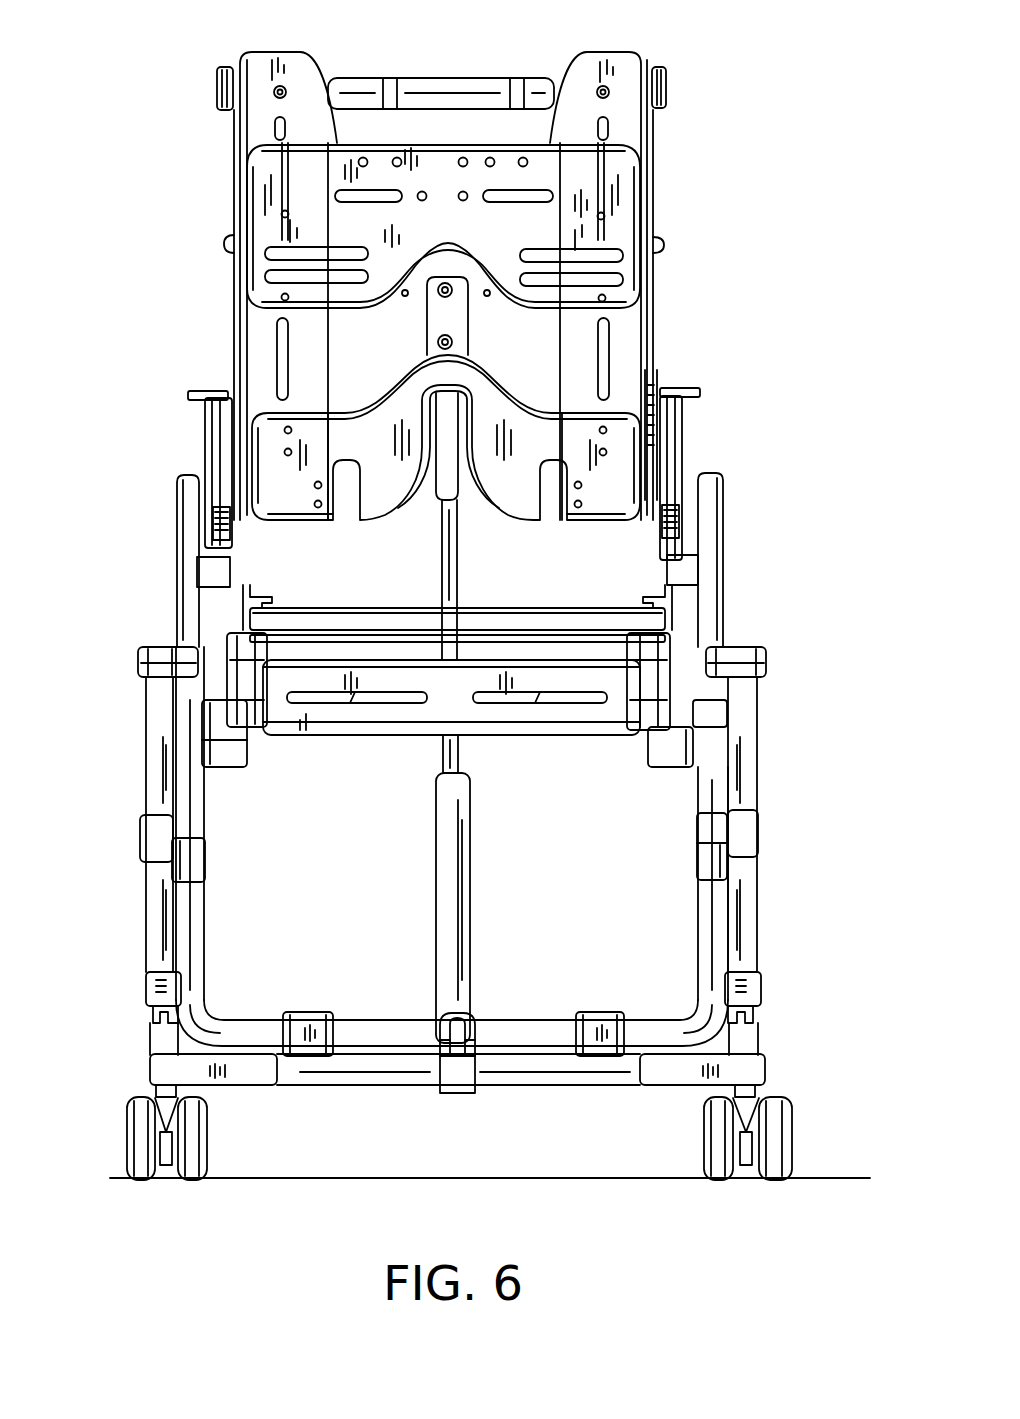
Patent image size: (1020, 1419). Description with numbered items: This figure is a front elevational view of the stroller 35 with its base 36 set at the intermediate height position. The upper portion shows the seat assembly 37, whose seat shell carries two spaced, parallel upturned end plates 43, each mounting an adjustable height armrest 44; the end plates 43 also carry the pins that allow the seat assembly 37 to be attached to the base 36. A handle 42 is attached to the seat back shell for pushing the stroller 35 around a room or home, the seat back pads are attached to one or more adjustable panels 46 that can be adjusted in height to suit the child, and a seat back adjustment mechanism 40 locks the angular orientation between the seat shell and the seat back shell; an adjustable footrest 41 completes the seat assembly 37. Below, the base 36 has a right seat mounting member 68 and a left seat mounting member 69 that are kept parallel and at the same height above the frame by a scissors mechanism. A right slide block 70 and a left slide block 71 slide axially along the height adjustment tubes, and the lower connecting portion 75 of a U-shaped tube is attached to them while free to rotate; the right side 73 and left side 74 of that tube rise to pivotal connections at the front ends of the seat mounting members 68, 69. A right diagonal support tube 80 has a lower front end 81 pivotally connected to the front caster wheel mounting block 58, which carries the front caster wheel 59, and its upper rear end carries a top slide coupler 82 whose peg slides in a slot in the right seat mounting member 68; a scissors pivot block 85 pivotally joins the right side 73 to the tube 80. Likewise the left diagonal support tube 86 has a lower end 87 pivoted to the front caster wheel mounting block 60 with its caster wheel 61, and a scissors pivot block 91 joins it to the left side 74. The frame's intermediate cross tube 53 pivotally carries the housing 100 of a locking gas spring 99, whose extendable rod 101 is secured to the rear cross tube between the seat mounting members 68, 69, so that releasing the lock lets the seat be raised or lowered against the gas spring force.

The stroller 35 is at (709, 59).
The base 36 is at (762, 757).
The seat assembly 37 is at (658, 172).
The seat back adjustment mechanism 40 is at (457, 543).
The adjustable footrest 41 is at (588, 730).
The handle 42 is at (457, 77).
The end plates 43 is at (203, 413).
The adjustable height armrest 44 is at (210, 393).
The adjustable panels 46 is at (340, 413).
The intermediate cross tube 53 is at (527, 1083).
The front caster wheel mounting block 58 is at (152, 1066).
The front caster wheel 59 is at (215, 1180).
The front caster wheel mounting block 60 is at (765, 1065).
The caster wheel 61 is at (782, 1180).
The right seat mounting member 68 is at (178, 538).
The left seat mounting member 69 is at (713, 588).
The right slide block 70 is at (292, 1013).
The left slide block 71 is at (598, 1012).
The right side 73 is at (204, 920).
The left side 74 is at (702, 926).
The lower connecting portion 75 is at (372, 1020).
The right diagonal support tube 80 is at (148, 923).
The lower front end 81 is at (147, 998).
The top slide coupler 82 is at (140, 660).
The scissors pivot block 85 is at (206, 858).
The left diagonal support tube 86 is at (758, 918).
The lower end 87 is at (762, 982).
The scissors pivot block 91 is at (698, 848).
The locking gas spring 99 is at (471, 865).
The housing 100 is at (476, 1015).
The extendable rod 101 is at (460, 750).